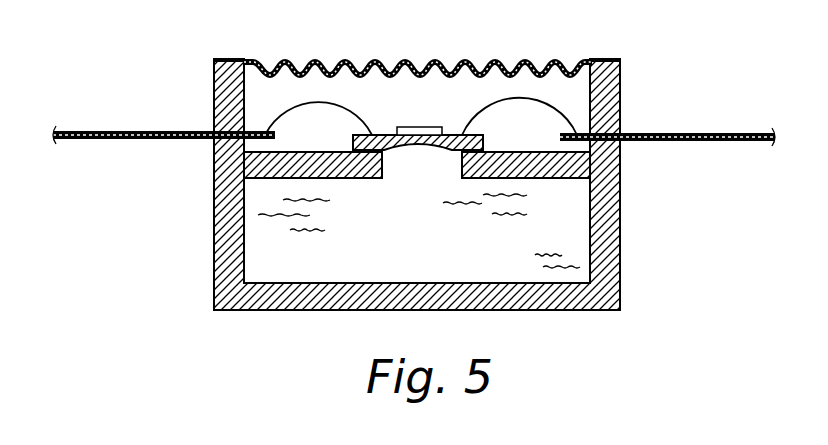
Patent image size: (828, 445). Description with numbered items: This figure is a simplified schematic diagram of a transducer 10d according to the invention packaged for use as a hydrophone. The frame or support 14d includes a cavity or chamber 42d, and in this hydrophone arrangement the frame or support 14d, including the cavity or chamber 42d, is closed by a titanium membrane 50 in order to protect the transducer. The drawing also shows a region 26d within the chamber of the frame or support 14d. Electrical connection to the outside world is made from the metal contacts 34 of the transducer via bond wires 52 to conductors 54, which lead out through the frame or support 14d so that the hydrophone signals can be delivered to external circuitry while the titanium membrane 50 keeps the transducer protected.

The pressure sensor assembly 10d is at (414, 186).
The frame or support 14d is at (215, 184).
The fluid 26d is at (448, 246).
The metal contacts 34 is at (378, 134).
The cavity or chamber 42d is at (290, 268).
The titanium membrane 50 is at (564, 66).
The bond wires 52 is at (287, 104).
The conductors 54 is at (150, 130).